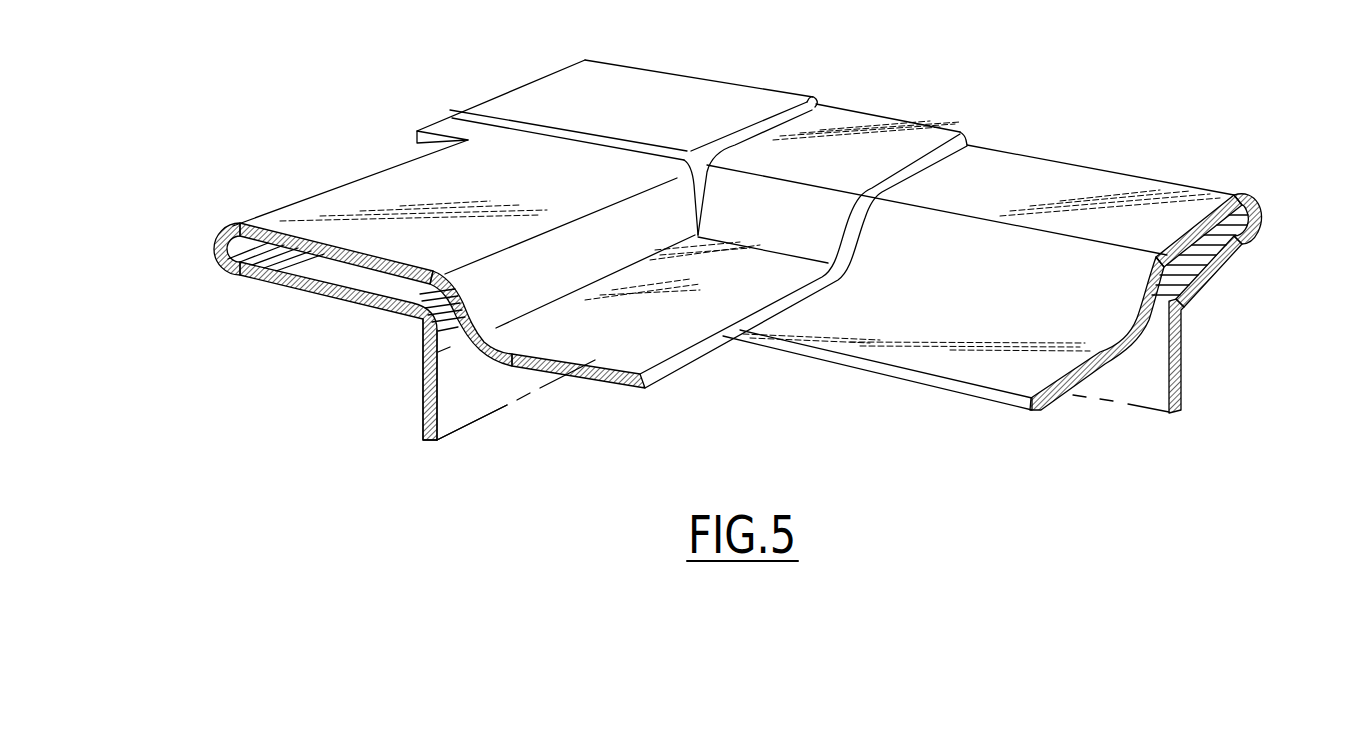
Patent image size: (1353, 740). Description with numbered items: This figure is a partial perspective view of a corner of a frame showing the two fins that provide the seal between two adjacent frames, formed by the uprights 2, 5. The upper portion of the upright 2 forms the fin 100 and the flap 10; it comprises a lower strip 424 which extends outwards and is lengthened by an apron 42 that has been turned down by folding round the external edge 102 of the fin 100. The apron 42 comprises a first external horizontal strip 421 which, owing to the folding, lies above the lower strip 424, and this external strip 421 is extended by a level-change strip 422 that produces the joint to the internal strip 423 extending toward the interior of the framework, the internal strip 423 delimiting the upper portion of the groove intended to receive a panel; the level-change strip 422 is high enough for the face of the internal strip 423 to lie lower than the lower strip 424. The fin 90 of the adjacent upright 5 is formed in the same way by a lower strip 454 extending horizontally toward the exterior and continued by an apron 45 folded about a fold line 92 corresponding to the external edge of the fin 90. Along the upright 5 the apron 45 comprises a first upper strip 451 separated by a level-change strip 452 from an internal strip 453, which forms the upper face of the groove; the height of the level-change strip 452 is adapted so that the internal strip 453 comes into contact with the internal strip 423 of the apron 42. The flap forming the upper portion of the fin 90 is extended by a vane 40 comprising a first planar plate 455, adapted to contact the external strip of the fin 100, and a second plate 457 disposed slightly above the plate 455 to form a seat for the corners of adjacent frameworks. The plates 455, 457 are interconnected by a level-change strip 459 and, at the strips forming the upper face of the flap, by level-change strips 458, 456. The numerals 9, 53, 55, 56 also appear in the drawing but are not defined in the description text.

The upright 2 is at (1181, 383).
The upright 5 is at (384, 412).
The lower sheet 9 is at (498, 375).
The flap 10 is at (900, 377).
The vane 40 is at (647, 97).
The apron 42 is at (1060, 322).
The apron 45 is at (393, 193).
The lower band of hem 53 is at (317, 252).
The upper band of hem 55 is at (358, 252).
The bend 56 is at (575, 380).
The fin 90 is at (208, 292).
The fold line 92 is at (214, 249).
The fin 100 is at (1157, 171).
The external edge 102 is at (1263, 214).
The first external horizontal strip 421 is at (990, 180).
The level-change strip 422 is at (1107, 268).
The internal strip 423 is at (998, 372).
The lower strip 424 is at (1247, 250).
The first upper strip 451 is at (300, 213).
The level-change strip 452 is at (578, 252).
The internal strip 453 is at (687, 323).
The lower strip 454 is at (343, 300).
The first planar plate 455 is at (837, 143).
The level-change strip 456 is at (760, 217).
The second plate 457 is at (567, 97).
The level-change strip 458 is at (475, 115).
The level-change strip 459 is at (803, 107).